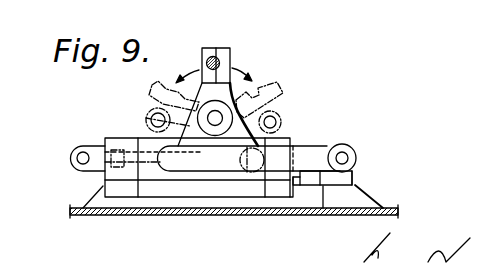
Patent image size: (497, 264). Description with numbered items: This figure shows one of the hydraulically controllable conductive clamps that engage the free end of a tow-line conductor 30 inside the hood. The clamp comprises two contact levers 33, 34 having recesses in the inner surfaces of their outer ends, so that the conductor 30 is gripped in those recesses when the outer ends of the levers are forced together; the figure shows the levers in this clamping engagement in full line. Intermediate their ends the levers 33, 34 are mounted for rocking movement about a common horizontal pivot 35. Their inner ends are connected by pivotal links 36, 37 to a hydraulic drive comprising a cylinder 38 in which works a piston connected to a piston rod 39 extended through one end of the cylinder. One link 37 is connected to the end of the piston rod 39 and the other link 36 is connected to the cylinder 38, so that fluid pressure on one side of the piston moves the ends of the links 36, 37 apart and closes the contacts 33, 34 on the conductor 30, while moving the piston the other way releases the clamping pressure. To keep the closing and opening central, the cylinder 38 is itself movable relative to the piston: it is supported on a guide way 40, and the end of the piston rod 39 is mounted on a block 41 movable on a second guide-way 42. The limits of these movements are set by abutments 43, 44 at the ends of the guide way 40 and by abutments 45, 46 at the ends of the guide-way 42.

The tow-line conductor 30 is at (222, 68).
The contact lever 33 is at (231, 62).
The contact lever 34 is at (203, 48).
The common horizontal pivot 35 is at (218, 116).
The pivotal link 36 is at (281, 119).
The pivotal link 37 is at (146, 118).
The cylinder 38 is at (227, 176).
The piston rod 39 is at (327, 146).
The guide way 40 is at (153, 196).
The block 41 is at (352, 173).
The guide-way 42 is at (323, 186).
The abutment 43 is at (105, 188).
The abutment 44 is at (290, 190).
The abutment 45 is at (303, 186).
The abutment 46 is at (355, 179).